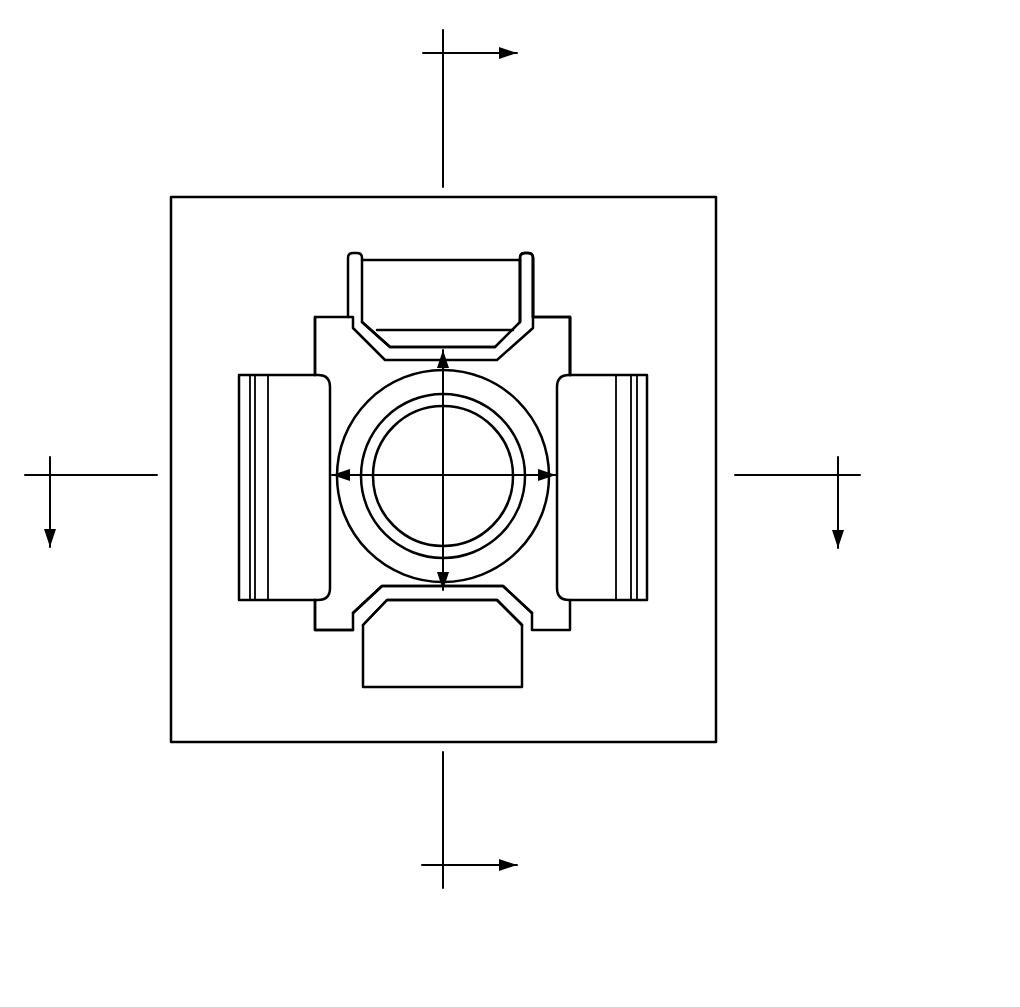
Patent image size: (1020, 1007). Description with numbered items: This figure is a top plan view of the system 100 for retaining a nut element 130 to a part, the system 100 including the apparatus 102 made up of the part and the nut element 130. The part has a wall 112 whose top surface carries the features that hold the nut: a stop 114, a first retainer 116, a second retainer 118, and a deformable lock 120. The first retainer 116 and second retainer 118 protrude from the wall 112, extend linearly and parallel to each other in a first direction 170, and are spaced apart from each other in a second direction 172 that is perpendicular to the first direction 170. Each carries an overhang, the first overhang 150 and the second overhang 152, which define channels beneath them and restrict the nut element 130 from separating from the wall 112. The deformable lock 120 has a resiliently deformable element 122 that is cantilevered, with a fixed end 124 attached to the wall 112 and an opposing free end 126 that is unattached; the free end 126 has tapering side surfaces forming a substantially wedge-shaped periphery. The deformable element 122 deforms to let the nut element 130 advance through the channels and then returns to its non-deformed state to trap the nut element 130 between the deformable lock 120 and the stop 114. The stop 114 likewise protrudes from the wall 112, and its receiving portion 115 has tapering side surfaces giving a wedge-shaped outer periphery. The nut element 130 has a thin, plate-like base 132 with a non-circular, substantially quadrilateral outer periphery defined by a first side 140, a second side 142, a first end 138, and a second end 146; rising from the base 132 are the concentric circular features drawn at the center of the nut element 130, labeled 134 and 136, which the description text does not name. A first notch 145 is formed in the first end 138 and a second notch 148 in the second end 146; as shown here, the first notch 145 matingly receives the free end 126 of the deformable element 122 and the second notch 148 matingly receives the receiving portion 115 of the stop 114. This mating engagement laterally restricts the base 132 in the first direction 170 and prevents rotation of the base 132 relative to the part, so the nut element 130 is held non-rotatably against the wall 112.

The system 100 is at (765, 150).
The apparatus 102 is at (737, 220).
The wall 112 is at (692, 255).
The stop 114 is at (522, 657).
The receiving portion 115 is at (463, 598).
The first retainer 116 is at (238, 412).
The second retainer 118 is at (648, 518).
The deformable lock 120 is at (407, 253).
The deformable element 122 is at (468, 282).
The fixed end 124 is at (497, 260).
The free end 126 is at (396, 354).
The nut element 130 is at (332, 308).
The base 132 is at (572, 330).
The annular ring 134 is at (395, 407).
The central bore 136 is at (437, 467).
The first end 138 is at (558, 268).
The first side 140 is at (313, 355).
The second side 142 is at (572, 358).
The first notch 145 is at (533, 277).
The second end 146 is at (327, 632).
The second notch 148 is at (372, 592).
The first overhang 150 is at (320, 518).
The second overhang 152 is at (570, 412).
The first direction 170 is at (445, 502).
The second direction 172 is at (472, 475).